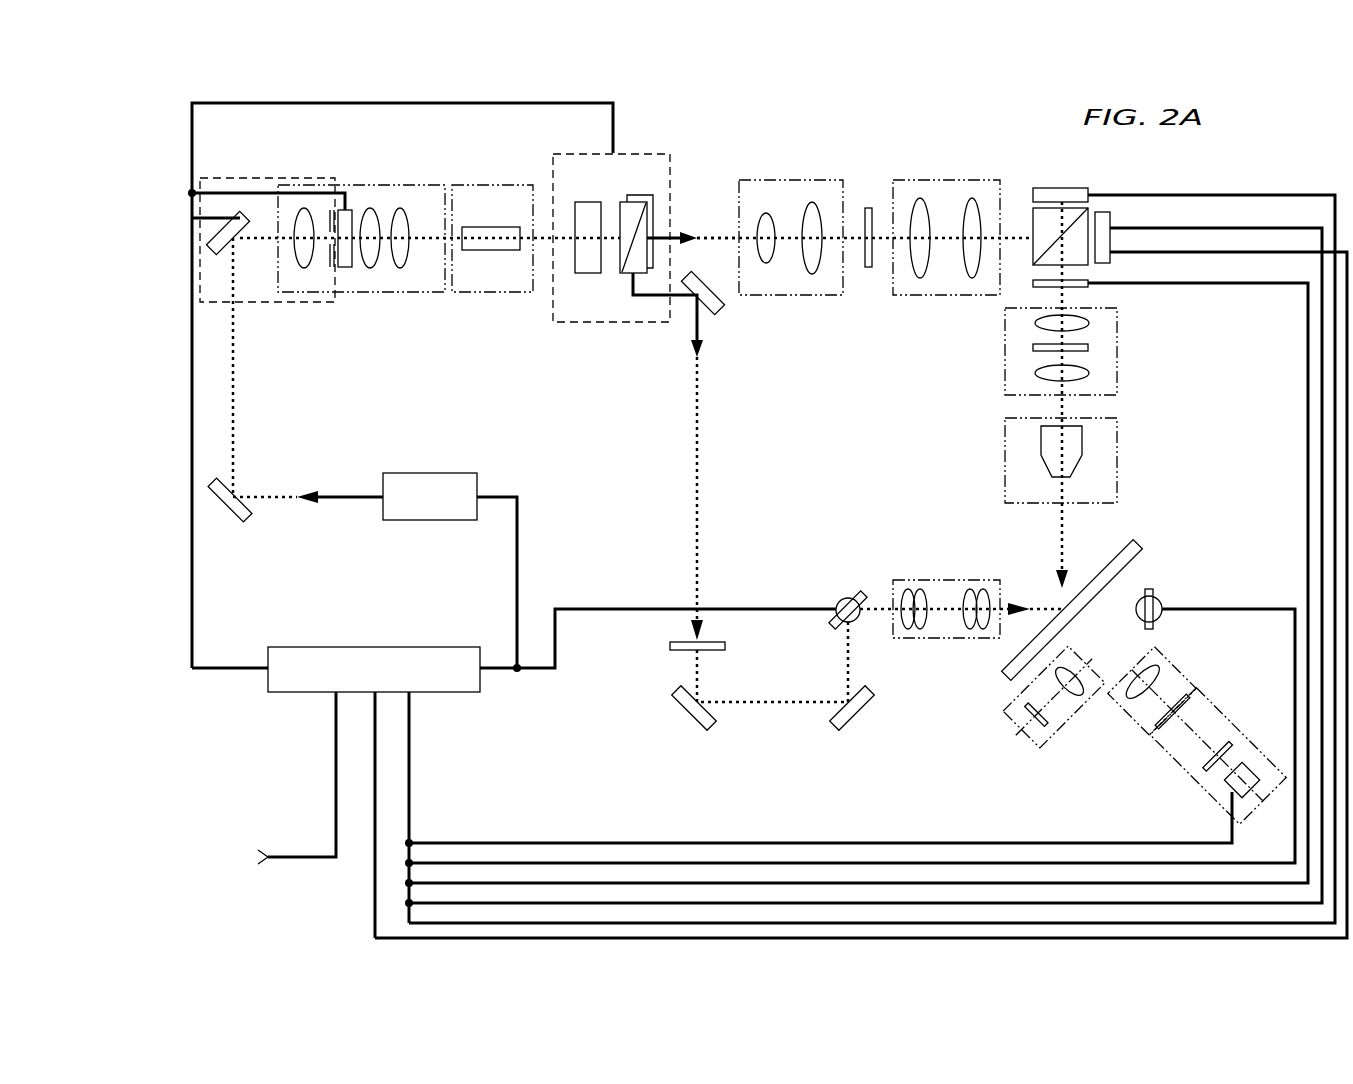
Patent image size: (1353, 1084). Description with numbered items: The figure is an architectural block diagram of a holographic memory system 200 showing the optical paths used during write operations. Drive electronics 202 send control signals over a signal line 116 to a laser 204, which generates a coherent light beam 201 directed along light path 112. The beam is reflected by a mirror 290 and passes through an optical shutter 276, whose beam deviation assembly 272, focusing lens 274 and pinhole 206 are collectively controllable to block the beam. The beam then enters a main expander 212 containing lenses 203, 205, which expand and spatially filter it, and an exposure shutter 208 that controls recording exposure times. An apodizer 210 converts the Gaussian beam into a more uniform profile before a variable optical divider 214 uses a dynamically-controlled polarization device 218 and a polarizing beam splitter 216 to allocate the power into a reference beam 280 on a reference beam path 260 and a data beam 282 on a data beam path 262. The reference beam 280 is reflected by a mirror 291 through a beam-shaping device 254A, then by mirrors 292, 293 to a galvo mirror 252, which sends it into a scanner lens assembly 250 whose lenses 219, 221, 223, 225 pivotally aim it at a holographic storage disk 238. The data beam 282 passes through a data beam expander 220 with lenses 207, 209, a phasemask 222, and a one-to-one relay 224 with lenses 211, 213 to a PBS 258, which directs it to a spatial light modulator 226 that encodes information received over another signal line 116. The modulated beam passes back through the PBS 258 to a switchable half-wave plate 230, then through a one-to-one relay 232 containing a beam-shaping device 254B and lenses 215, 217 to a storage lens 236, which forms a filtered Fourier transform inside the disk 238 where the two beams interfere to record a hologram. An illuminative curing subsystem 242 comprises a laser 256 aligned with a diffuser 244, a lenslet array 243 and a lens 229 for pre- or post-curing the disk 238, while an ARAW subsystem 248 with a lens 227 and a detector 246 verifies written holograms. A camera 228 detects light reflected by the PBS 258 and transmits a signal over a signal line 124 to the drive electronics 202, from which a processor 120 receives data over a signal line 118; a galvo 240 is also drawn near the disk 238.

The holographic memory system 200 is at (478, 90).
The main expander assembly 212 is at (368, 185).
The polarizing beam splitter 216 is at (630, 200).
The dynamically-controlled polarization device 218 is at (575, 205).
The data light beam 282 is at (662, 232).
The data beam path 262 is at (718, 236).
The lens 207 is at (766, 213).
The lens 209 is at (812, 202).
The phasemask 222 is at (868, 208).
The lens 211 is at (920, 198).
The lens 213 is at (972, 198).
The spatial light modulator 226 is at (1040, 188).
The polarizing beam splitter 258 is at (1068, 230).
The camera 228 is at (1110, 225).
The beam deviation assembly 272 is at (212, 240).
The focusing lens 274 is at (299, 264).
The pinhole 206 is at (328, 258).
The exposure shutter 208 is at (344, 268).
The lens 203 is at (372, 268).
The lens 205 is at (400, 268).
The apodizer 210 is at (484, 294).
The data beam expander lens assembly 220 is at (820, 295).
The 1:1 relay 224 is at (970, 295).
The switchable half-wave plate 230 is at (1088, 284).
The lens 215 is at (1088, 325).
The beam-shaping device 254B is at (1005, 348).
The lens 217 is at (1066, 380).
The 1:1 relay 232 is at (1118, 377).
The storage lens 236 is at (1005, 445).
The optical shutter 276 is at (212, 303).
The variable optical divider 214 is at (565, 322).
The reference light beam 280 is at (651, 346).
The mirror 291 is at (712, 322).
The reference beam path 260 is at (700, 452).
The holographic storage disk 238 is at (1130, 548).
The light path 112 is at (233, 450).
The mirror 290 is at (223, 512).
The coherent light beam 201 is at (340, 498).
The laser 204 is at (430, 520).
The signal line 116 is at (192, 581).
The scanner lens assembly 250 is at (965, 580).
The galvo mirror 252 is at (836, 622).
The galvo 240 is at (1158, 597).
The lens 229 is at (1135, 672).
The lenslet array 243 is at (1188, 703).
The illuminative curing subsystem 242 is at (1245, 731).
The lens 219 is at (908, 630).
The lens 221 is at (920, 630).
The lens 223 is at (970, 630).
The lens 225 is at (983, 630).
The beam-shaping device 254A is at (672, 650).
The mirror 292 is at (708, 722).
The mirror 293 is at (862, 718).
The lens 227 is at (1086, 694).
The detector 246 is at (1049, 737).
The associative read after write subsystem 248 is at (1030, 740).
The diffuser 244 is at (1205, 772).
The laser 256 is at (1262, 800).
The drive electronics 202 is at (297, 692).
The signal line 118 is at (336, 770).
The processor 120 is at (219, 860).
The signal line 124 is at (375, 880).